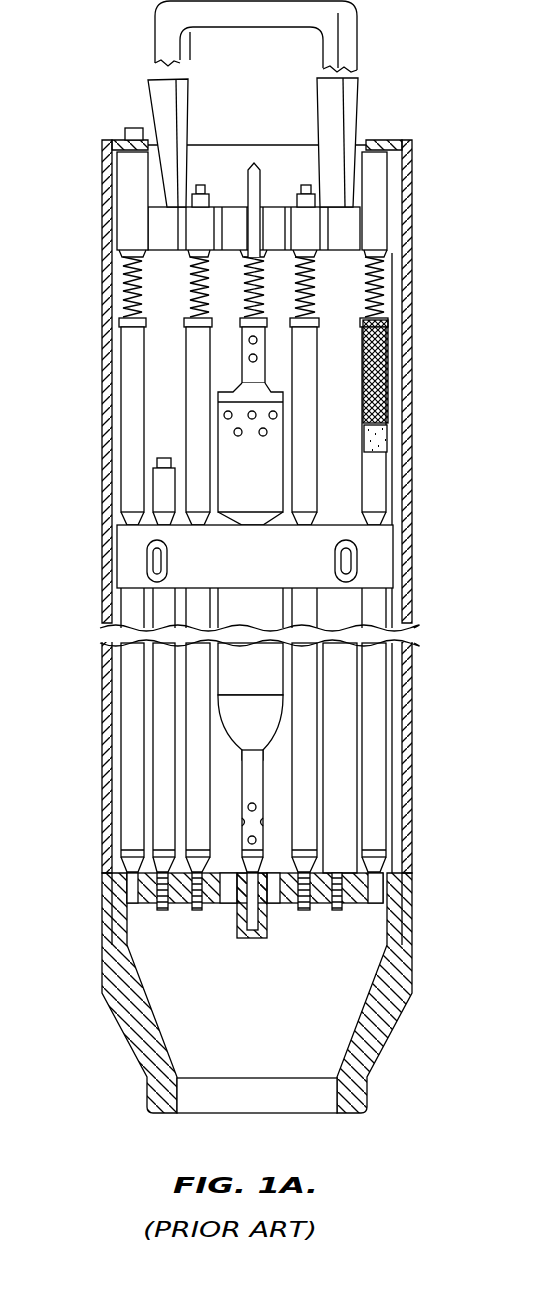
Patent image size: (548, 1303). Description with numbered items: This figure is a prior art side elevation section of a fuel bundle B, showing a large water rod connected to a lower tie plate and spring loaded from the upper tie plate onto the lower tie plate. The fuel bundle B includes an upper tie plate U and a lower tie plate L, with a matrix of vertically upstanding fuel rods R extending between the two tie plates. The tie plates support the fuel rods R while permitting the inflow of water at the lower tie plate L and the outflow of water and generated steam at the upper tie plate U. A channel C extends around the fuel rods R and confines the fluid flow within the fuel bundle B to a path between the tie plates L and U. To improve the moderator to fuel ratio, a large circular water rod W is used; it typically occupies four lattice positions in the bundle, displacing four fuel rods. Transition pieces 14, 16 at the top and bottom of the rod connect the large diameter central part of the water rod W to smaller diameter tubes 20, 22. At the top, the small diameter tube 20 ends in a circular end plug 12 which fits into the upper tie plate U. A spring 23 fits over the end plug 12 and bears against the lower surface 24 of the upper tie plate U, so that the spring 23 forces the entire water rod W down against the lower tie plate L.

The fuel bundle B is at (96, 395).
The channel C is at (412, 717).
The upper tie plate U is at (343, 228).
The lower tie plate L is at (375, 892).
The circular end plug 12 is at (263, 232).
The transition piece 14 is at (340, 446).
The transition piece 16 is at (260, 723).
The smaller diameter tube 20 is at (272, 345).
The smaller diameter tube 22 is at (267, 790).
The spring 23 is at (385, 278).
The lower surface of the upper tie plate 24 is at (256, 280).
The fuel rods R is at (316, 357).
The large circular water rod W is at (258, 474).